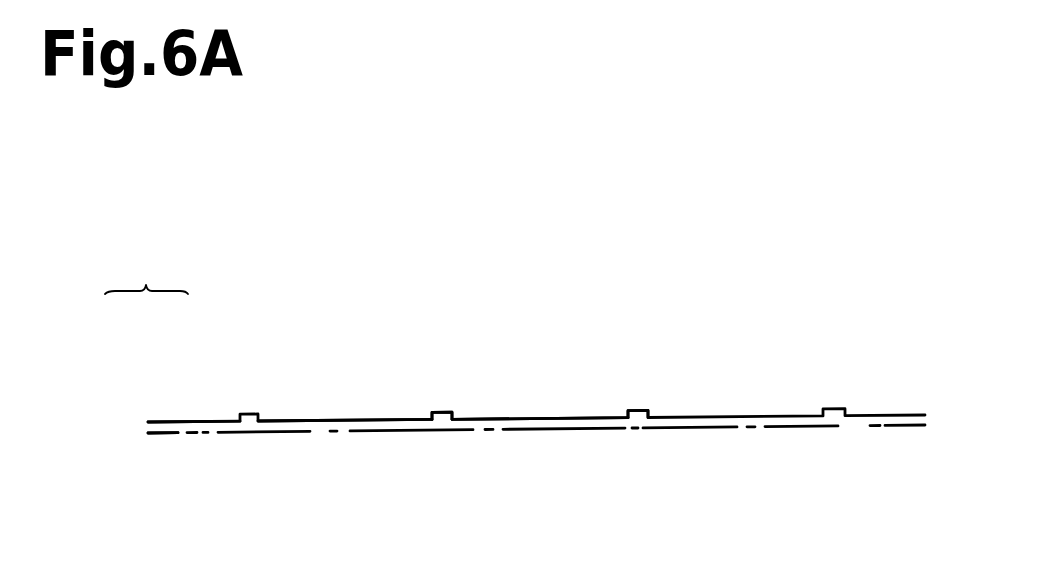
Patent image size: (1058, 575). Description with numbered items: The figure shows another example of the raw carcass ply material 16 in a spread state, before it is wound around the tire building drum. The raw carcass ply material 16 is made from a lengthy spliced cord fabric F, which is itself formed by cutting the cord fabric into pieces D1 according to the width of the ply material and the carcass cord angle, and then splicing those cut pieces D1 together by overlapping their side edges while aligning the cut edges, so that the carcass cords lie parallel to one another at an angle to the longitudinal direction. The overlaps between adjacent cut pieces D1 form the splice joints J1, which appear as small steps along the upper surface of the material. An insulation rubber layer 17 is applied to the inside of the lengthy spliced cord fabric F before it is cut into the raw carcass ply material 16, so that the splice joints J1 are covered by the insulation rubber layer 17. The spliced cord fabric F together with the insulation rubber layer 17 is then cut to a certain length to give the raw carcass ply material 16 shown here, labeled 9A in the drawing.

The strip-shaped substrate 9A is at (690, 392).
The raw carcass ply material 16 is at (192, 422).
The insulation rubber layer 17 is at (180, 440).
The lengthy spliced cord fabric F is at (146, 273).
The cut pieces D1 is at (327, 422).
The splice joints J1 is at (445, 400).